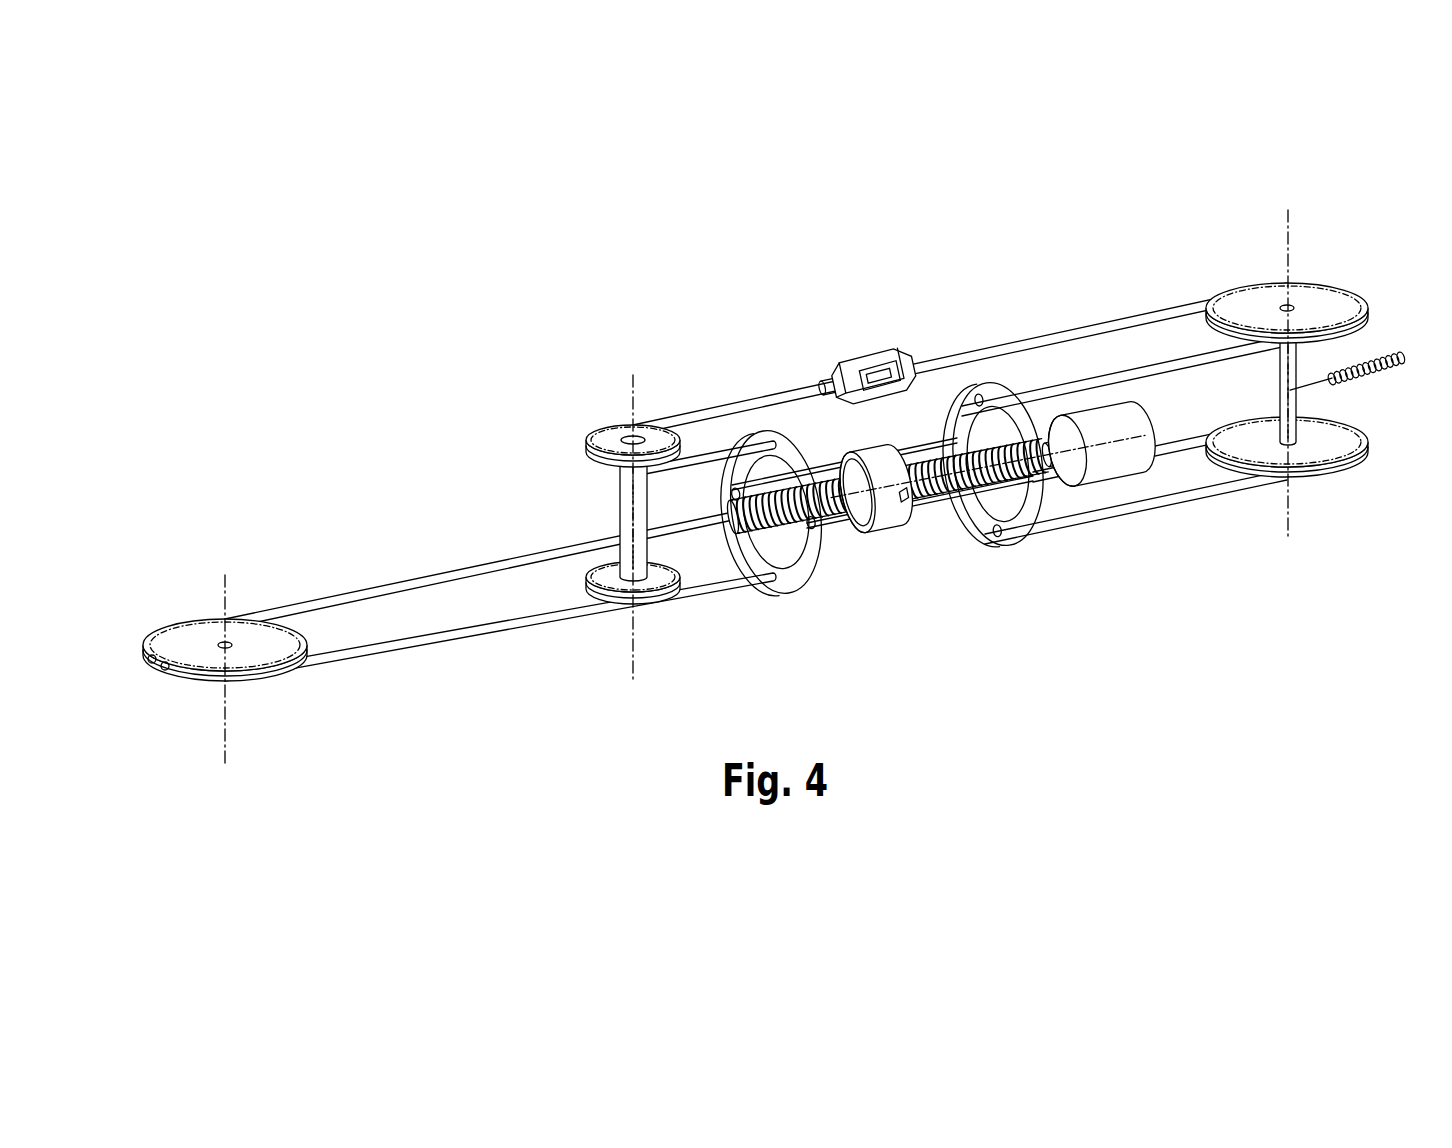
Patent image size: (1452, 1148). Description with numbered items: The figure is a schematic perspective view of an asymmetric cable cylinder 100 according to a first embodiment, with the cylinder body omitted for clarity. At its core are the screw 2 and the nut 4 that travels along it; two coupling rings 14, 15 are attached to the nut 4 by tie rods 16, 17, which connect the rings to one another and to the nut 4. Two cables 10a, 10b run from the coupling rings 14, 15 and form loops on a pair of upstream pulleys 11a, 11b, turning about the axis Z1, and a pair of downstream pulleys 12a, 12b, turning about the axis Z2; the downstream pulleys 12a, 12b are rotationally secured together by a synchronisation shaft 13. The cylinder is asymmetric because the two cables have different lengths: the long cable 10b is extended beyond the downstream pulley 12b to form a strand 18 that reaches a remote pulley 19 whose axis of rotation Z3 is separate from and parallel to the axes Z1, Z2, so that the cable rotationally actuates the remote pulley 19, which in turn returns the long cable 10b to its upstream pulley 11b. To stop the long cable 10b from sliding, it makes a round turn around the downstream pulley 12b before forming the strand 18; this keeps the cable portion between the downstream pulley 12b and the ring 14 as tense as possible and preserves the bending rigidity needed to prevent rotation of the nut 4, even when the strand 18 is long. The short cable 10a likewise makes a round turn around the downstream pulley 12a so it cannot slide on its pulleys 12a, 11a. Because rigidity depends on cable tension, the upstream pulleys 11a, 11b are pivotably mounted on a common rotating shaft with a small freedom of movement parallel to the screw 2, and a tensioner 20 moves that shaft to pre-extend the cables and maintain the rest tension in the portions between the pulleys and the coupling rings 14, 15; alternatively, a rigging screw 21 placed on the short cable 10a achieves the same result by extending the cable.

The drive device 100 is at (1083, 255).
The screw 2 is at (940, 500).
The nut 4 is at (891, 523).
The short cable 10a is at (1031, 344).
The long cable 10b is at (1158, 505).
The upstream pulley 11a is at (1340, 300).
The upstream pulley 11b is at (1332, 457).
The downstream pulley 12a is at (600, 432).
The downstream pulley 12b is at (610, 588).
The synchronisation shaft 13 is at (620, 505).
The coupling ring 14 is at (798, 592).
The coupling ring 15 is at (1013, 537).
The tie rod 16 is at (826, 466).
The tie rod 17 is at (918, 447).
The strand 18 is at (440, 630).
The remote pulley 19 is at (195, 628).
The tensioner 20 is at (1385, 377).
The rigging screw 21 is at (870, 355).
The axis of rotation Z1 is at (1290, 222).
The axis of rotation Z2 is at (636, 656).
The axis of rotation Z3 is at (228, 740).